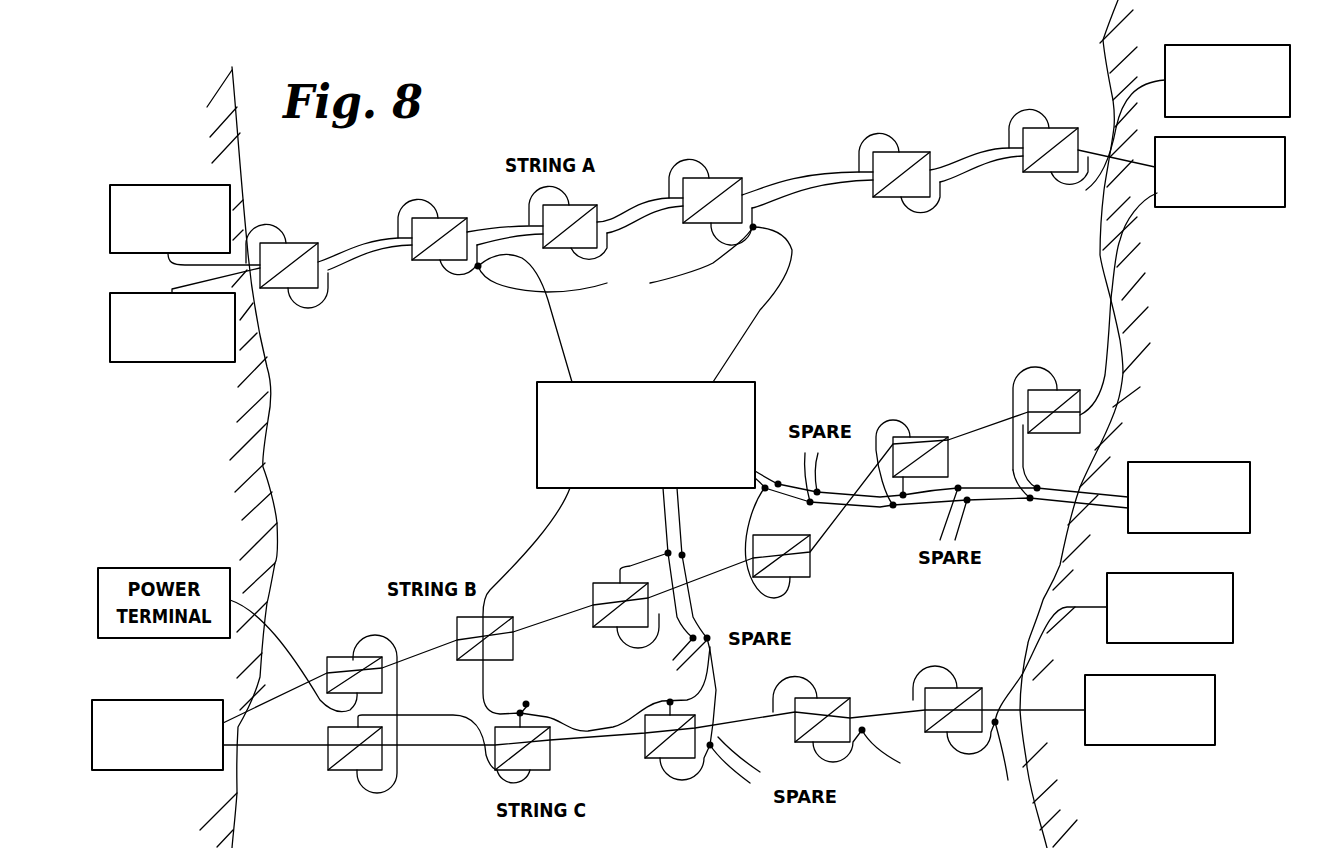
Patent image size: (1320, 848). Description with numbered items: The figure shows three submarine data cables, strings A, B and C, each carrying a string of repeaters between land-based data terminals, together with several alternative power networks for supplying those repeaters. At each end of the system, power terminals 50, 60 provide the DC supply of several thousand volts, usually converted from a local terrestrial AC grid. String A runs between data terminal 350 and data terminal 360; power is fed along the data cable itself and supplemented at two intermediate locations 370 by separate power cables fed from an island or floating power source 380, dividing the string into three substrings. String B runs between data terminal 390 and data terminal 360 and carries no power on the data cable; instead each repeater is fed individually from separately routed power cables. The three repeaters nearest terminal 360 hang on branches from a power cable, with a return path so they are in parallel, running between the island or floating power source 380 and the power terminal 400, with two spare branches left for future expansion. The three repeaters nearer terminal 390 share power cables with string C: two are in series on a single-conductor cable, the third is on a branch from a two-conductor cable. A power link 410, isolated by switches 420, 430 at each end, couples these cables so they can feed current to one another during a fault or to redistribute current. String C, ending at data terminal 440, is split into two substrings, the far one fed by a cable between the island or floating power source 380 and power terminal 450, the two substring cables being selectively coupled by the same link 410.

The power terminal 50 is at (180, 190).
The power terminal 60 is at (1228, 52).
The data terminal 350 is at (177, 355).
The data terminal 360 is at (1215, 200).
The intermediate locations 370 is at (634, 303).
The island or floating power source 380 is at (557, 438).
The data terminal 390 is at (160, 762).
The power terminal 400 is at (1185, 468).
The power link 410 is at (595, 729).
The switch 420 is at (527, 705).
The switch 430 is at (669, 699).
The data terminal 440 is at (1140, 738).
The power terminal 450 is at (1173, 580).